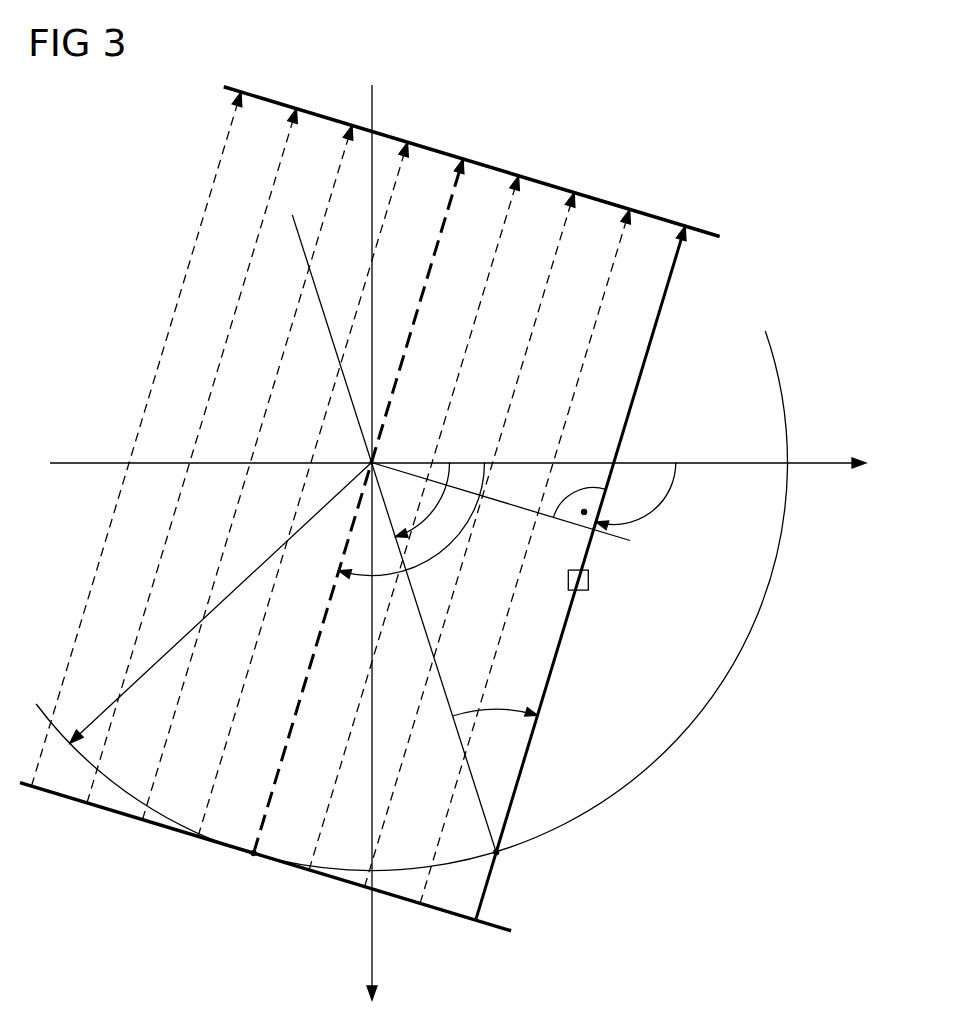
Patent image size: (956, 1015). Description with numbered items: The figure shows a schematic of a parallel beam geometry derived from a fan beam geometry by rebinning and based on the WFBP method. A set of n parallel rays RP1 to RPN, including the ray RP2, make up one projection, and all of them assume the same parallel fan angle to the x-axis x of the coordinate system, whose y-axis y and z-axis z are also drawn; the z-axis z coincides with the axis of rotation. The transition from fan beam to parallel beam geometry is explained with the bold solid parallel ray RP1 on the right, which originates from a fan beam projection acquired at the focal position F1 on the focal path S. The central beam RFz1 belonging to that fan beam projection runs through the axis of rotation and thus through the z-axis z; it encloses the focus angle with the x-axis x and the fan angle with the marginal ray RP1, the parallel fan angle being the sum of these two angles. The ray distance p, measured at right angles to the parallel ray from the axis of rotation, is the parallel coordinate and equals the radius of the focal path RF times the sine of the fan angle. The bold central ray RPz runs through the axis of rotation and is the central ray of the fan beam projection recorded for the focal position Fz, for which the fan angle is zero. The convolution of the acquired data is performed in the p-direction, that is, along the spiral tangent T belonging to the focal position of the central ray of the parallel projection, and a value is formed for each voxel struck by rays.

The parallel ray RPN is at (212, 190).
The central ray RPz is at (452, 203).
The parallel ray RP2 is at (622, 241).
The parallel ray RP1 is at (660, 326).
The focal path S is at (790, 418).
The spiral tangent T is at (125, 815).
The ray distance p is at (512, 502).
The radius of the focal path RF is at (112, 706).
The central ray RFz1 is at (470, 773).
The focal position F1 is at (498, 852).
The focal position Fz is at (250, 853).
The z-axis z is at (370, 462).
The x-axis x is at (458, 479).
The y-axis y is at (362, 542).